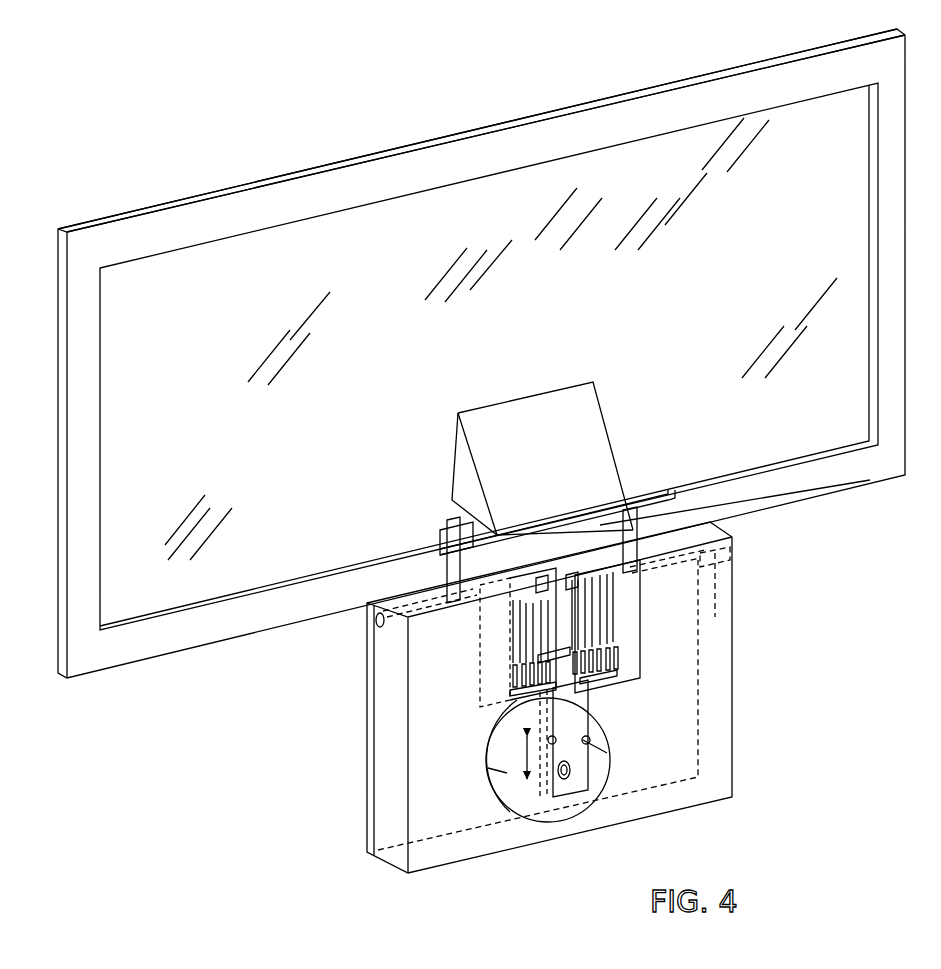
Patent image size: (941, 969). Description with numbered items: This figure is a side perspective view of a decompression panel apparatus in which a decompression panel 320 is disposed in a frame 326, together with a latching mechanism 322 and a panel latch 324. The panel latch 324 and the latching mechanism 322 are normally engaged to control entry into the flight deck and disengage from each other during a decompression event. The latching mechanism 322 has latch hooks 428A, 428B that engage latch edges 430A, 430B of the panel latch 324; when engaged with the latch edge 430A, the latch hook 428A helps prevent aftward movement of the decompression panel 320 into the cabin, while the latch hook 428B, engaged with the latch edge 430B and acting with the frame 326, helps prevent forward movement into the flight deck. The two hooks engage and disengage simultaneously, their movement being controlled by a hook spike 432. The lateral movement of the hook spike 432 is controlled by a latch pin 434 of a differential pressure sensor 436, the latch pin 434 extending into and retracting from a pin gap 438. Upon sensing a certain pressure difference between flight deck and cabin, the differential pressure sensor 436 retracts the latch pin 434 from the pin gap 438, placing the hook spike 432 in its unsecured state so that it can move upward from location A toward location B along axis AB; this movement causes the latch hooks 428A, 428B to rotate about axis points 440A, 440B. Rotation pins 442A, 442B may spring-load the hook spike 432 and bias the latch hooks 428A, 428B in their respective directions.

The decompression panel 320 is at (130, 445).
The latching mechanism 322 is at (333, 730).
The panel latch 324 is at (500, 412).
The frame 326 is at (348, 170).
The latch hook 428A is at (520, 577).
The latch hook 428B is at (607, 582).
The latch edge 430A is at (475, 540).
The latch edge 430B is at (625, 532).
The hook spike 432 is at (568, 707).
The latch pin 434 is at (567, 762).
The differential pressure sensor 436 is at (512, 740).
The pin gap 438 is at (572, 785).
The axis point 440A is at (541, 578).
The axis point 440B is at (571, 576).
The rotation pin 442A is at (423, 605).
The rotation pin 442B is at (687, 562).